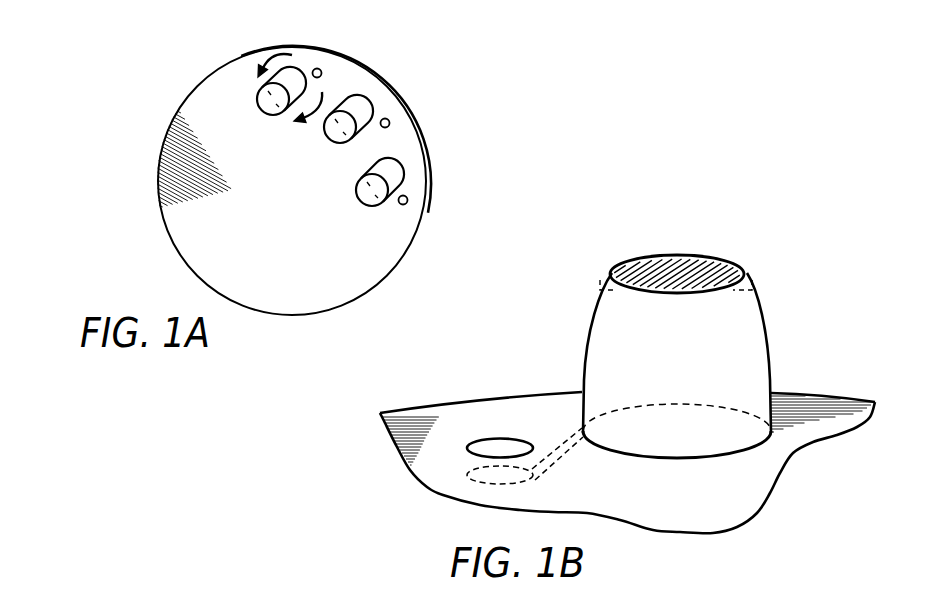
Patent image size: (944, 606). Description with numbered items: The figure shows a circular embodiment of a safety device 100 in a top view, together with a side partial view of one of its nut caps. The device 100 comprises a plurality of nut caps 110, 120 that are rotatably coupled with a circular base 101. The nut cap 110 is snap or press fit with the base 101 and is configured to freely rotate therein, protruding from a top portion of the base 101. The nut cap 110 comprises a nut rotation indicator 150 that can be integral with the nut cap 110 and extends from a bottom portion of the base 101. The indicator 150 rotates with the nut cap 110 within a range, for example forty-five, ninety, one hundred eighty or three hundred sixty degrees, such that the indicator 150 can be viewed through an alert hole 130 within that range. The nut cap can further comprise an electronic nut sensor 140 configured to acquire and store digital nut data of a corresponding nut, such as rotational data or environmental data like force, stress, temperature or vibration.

In FIG. 1A, the device 100 is at (140, 92).
In FIG. 1A, the base 101 is at (233, 218).
In FIG. 1A, the nut cap 110 is at (257, 105).
In FIG. 1B, the nut cap 110 is at (608, 312).
In FIG. 1A, the nut cap 120 is at (365, 104).
In FIG. 1A, the alert hole 130 is at (318, 68).
In FIG. 1B, the alert hole 130 is at (502, 448).
In FIG. 1B, the electronic nut sensor 140 is at (697, 272).
In FIG. 1B, the nut rotation indicator 150 is at (468, 471).